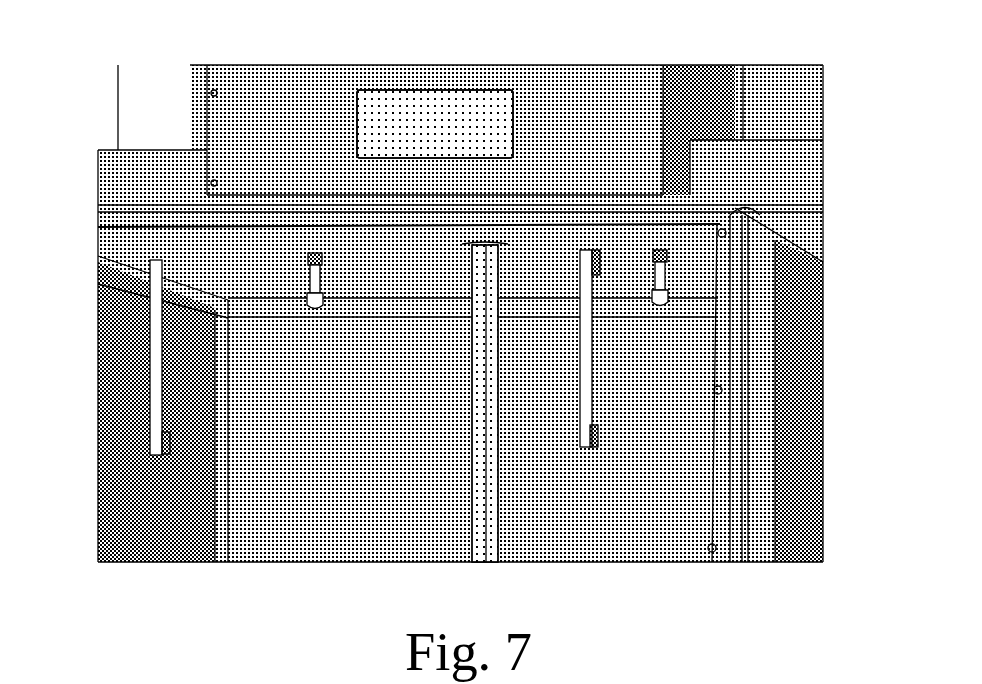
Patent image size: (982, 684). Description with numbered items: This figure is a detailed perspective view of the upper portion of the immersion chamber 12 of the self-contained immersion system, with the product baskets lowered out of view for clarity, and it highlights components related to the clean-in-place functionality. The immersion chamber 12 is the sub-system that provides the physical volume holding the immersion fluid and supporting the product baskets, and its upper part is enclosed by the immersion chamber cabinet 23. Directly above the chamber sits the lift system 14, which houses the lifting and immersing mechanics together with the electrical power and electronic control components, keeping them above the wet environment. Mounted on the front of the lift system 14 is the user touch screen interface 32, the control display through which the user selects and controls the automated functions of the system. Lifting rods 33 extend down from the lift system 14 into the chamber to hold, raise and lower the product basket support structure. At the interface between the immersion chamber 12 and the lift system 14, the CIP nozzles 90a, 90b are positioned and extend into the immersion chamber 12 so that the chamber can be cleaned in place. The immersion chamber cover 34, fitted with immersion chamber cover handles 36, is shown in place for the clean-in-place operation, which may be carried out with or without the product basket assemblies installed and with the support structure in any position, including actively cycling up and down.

The immersion chamber 12 is at (806, 368).
The lift system 14 is at (287, 103).
The immersion chamber cabinet 23 is at (130, 515).
The user touch screen interface 32 is at (510, 128).
The lifting rods 33 is at (470, 382).
The immersion chamber cover 34 is at (315, 536).
The immersion chamber cover handles 36 is at (160, 408).
The CIP nozzle 90a is at (312, 288).
The CIP nozzle 90b is at (655, 288).